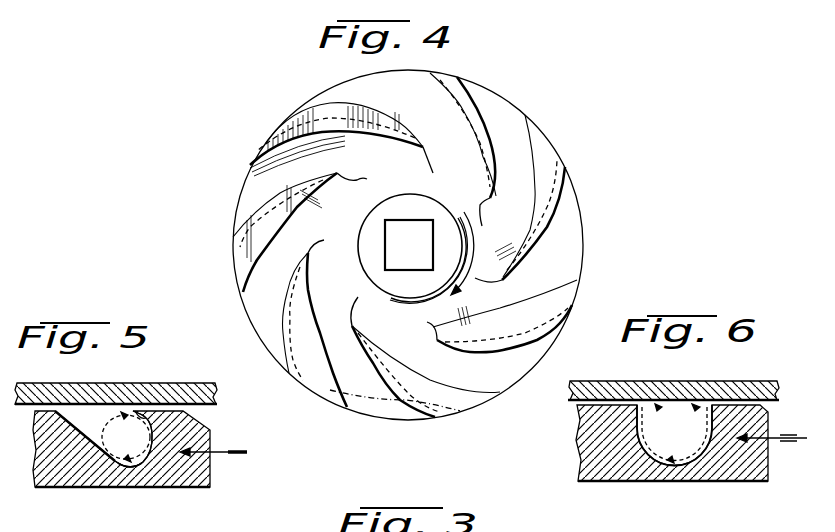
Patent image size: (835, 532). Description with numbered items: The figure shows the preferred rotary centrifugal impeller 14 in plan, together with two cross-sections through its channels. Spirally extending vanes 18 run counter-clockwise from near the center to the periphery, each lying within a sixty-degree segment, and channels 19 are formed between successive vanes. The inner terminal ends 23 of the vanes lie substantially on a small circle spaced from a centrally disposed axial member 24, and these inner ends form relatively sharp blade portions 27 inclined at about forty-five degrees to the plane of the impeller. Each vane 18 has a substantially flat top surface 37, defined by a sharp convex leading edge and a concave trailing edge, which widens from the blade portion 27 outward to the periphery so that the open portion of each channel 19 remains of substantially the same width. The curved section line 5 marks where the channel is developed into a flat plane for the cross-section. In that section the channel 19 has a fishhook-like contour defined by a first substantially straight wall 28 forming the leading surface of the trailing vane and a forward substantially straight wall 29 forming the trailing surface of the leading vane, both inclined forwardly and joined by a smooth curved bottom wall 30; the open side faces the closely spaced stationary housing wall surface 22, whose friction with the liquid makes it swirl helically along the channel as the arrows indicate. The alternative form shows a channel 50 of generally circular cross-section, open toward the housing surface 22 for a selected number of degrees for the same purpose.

In FIG. 4, the section line 5 is at (307, 363).
In FIG. 4, the rotary centrifugal impeller 14 is at (233, 245).
In FIG. 5, the rotary centrifugal impeller 14 is at (210, 473).
In FIG. 4, the spirally extending vanes 18 is at (300, 129).
In FIG. 4, the channels 19 is at (260, 188).
In FIG. 5, the channels 19 is at (110, 435).
In FIG. 5, the stationary housing wall surface 22 is at (197, 405).
In FIG. 6, the stationary housing wall surface 22 is at (593, 402).
In FIG. 4, the inner terminal ends 23 is at (482, 222).
In FIG. 4, the hub 24 is at (368, 228).
In FIG. 4, the blade portions 27 is at (485, 205).
In FIG. 5, the first substantially straight wall 28 is at (135, 411).
In FIG. 5, the forward substantially straight wall 29 is at (68, 410).
In FIG. 5, the bottom wall 30 is at (143, 447).
In FIG. 4, the flat top surface 37 is at (470, 123).
In FIG. 6, the channel cross-section 50 is at (645, 430).